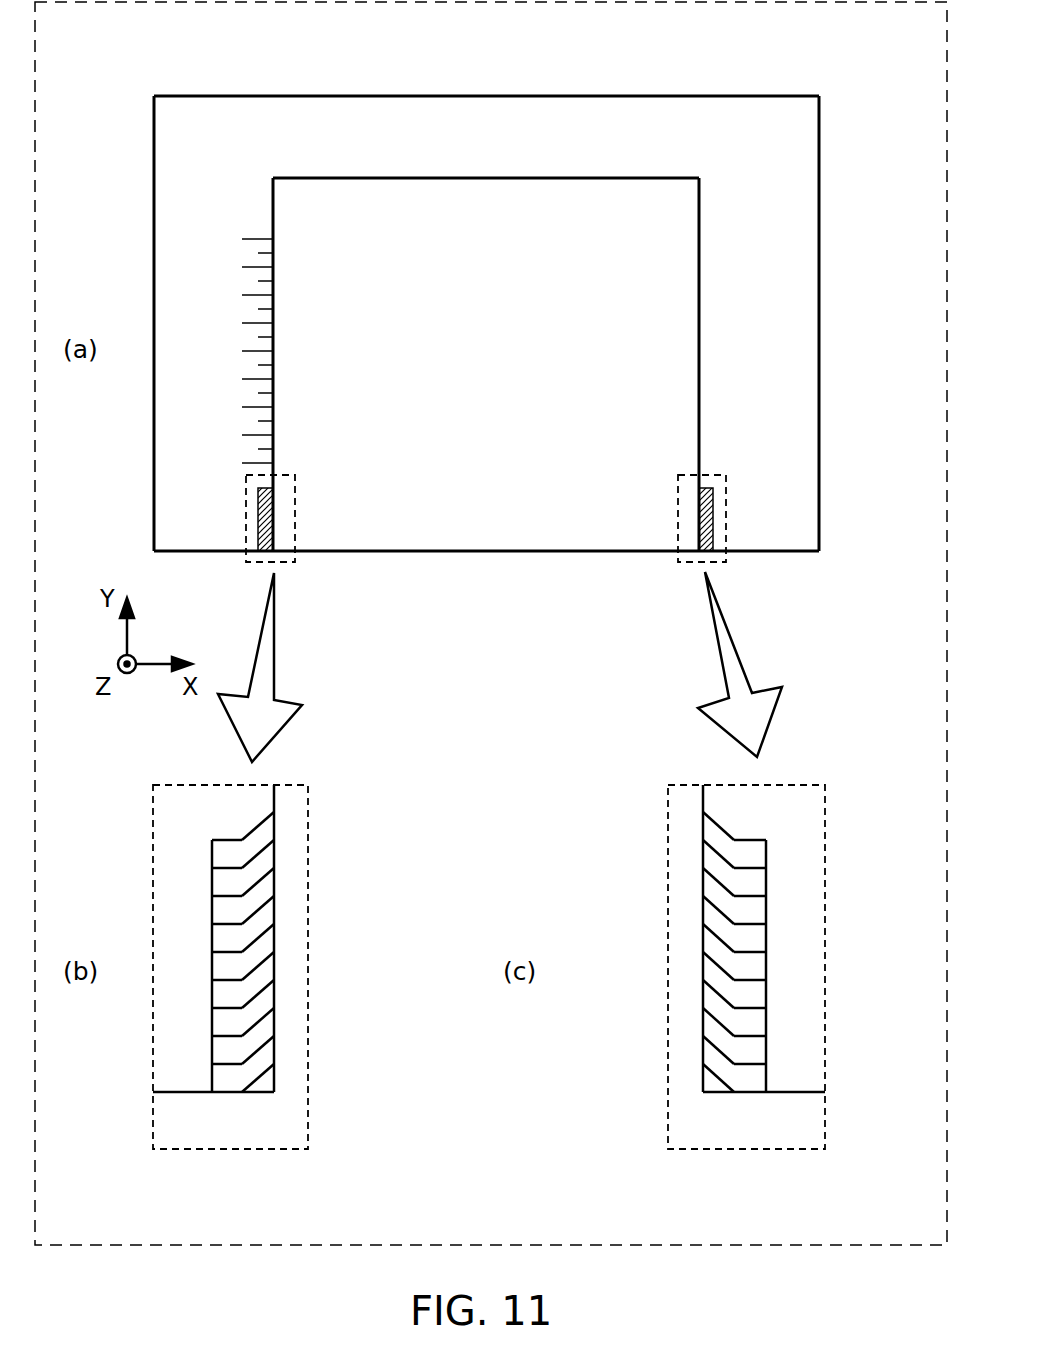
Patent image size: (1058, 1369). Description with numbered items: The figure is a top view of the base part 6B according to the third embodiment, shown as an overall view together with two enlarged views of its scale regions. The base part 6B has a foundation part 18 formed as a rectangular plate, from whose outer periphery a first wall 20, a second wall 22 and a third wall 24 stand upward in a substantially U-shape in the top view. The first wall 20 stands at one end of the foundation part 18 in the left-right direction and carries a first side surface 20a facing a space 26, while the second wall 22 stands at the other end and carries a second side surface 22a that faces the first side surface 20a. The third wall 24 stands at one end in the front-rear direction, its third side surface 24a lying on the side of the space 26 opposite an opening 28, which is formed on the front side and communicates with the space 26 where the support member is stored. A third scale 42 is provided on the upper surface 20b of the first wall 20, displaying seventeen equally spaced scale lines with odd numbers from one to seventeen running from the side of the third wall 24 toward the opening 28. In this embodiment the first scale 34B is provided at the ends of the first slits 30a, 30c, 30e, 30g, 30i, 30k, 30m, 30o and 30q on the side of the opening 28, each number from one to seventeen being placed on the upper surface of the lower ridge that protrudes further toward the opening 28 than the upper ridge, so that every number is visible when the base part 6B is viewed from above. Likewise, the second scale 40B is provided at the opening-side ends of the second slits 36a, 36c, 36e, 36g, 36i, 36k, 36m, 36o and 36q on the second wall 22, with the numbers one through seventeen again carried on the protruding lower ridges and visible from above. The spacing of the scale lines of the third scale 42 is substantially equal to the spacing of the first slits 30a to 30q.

The base part 6B is at (862, 86).
The foundation part 18 is at (386, 553).
The first wall 20 is at (175, 508).
The first side surface 20a is at (278, 196).
The upper surface 20b is at (170, 453).
The second wall 22 is at (795, 285).
The second side surface 22a is at (699, 326).
The third wall 24 is at (520, 115).
The third side surface 24a is at (568, 190).
The space 26 is at (501, 377).
The opening 28 is at (692, 522).
The third scale 42 is at (188, 296).
The first scale 34B is at (290, 510).
The second scale 40B is at (690, 497).
The first slit 30a is at (277, 824).
The first slit 30c is at (277, 852).
The first slit 30e is at (277, 880).
The first slit 30g is at (277, 908).
The first slit 30i is at (277, 936).
The first slit 30k is at (277, 964).
The first slit 30m is at (277, 992).
The first slit 30o is at (277, 1020).
The first slit 30q is at (277, 1048).
The second slit 36a is at (700, 824).
The second slit 36c is at (700, 852).
The second slit 36e is at (700, 880).
The second slit 36g is at (700, 908).
The second slit 36i is at (700, 936).
The second slit 36k is at (700, 964).
The second slit 36m is at (700, 992).
The second slit 36o is at (700, 1020).
The second slit 36q is at (700, 1048).